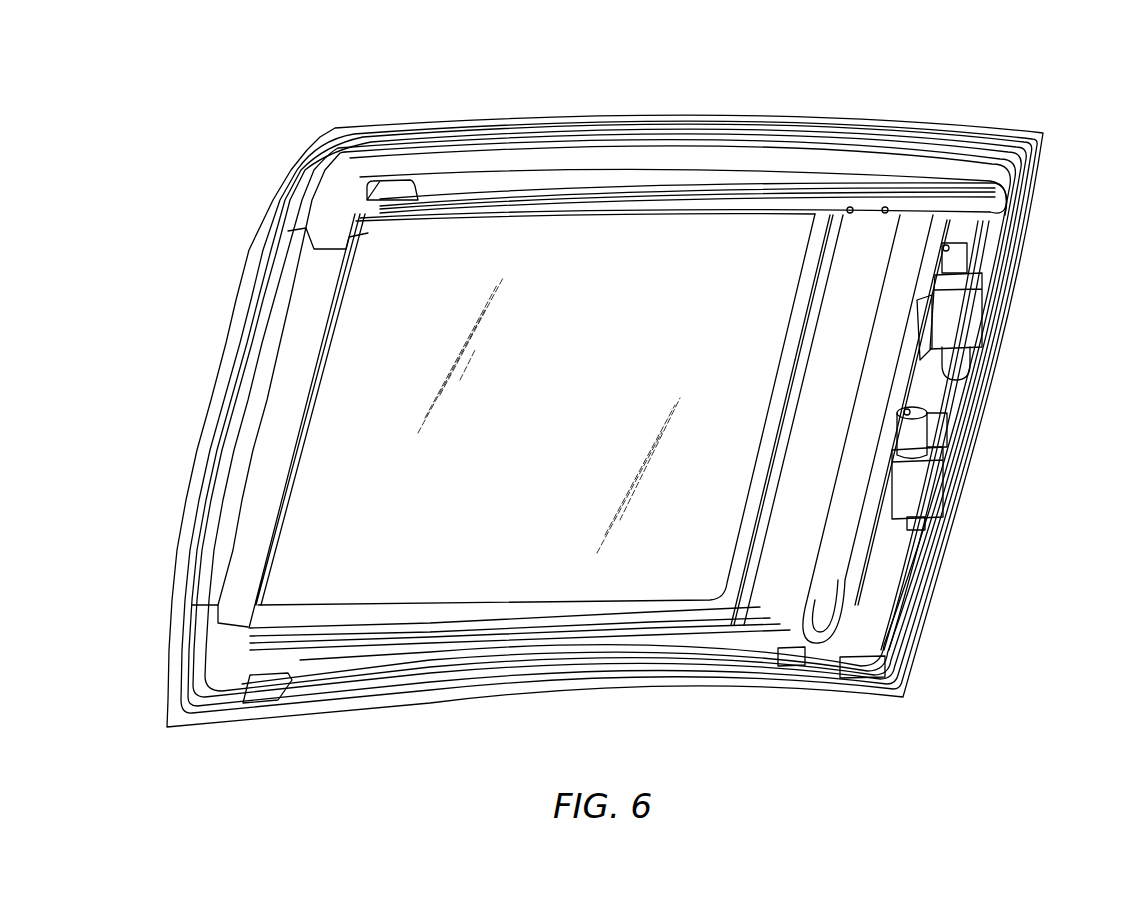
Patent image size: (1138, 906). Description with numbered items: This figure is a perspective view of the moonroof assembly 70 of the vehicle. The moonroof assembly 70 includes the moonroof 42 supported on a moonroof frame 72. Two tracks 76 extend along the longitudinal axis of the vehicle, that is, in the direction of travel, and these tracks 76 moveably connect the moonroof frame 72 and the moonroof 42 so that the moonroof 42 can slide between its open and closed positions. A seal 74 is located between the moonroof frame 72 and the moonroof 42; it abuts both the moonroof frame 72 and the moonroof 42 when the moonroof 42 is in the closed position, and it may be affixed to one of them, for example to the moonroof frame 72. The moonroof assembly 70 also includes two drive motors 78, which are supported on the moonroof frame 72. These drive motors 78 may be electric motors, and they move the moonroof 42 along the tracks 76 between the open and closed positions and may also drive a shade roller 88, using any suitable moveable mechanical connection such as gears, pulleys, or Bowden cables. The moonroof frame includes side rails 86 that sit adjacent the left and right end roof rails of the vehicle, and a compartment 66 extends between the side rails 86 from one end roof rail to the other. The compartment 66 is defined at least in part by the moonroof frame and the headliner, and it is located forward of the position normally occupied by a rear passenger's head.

The moonroof assembly 70 is at (677, 77).
The moonroof frame 72 is at (255, 517).
The seal 74 is at (388, 128).
The tracks 76 is at (460, 665).
The drive motor 78 is at (922, 507).
The side rails 86 is at (950, 167).
The shade roller 88 is at (907, 268).
The compartment 66 is at (885, 557).
The moonroof 42 is at (566, 401).